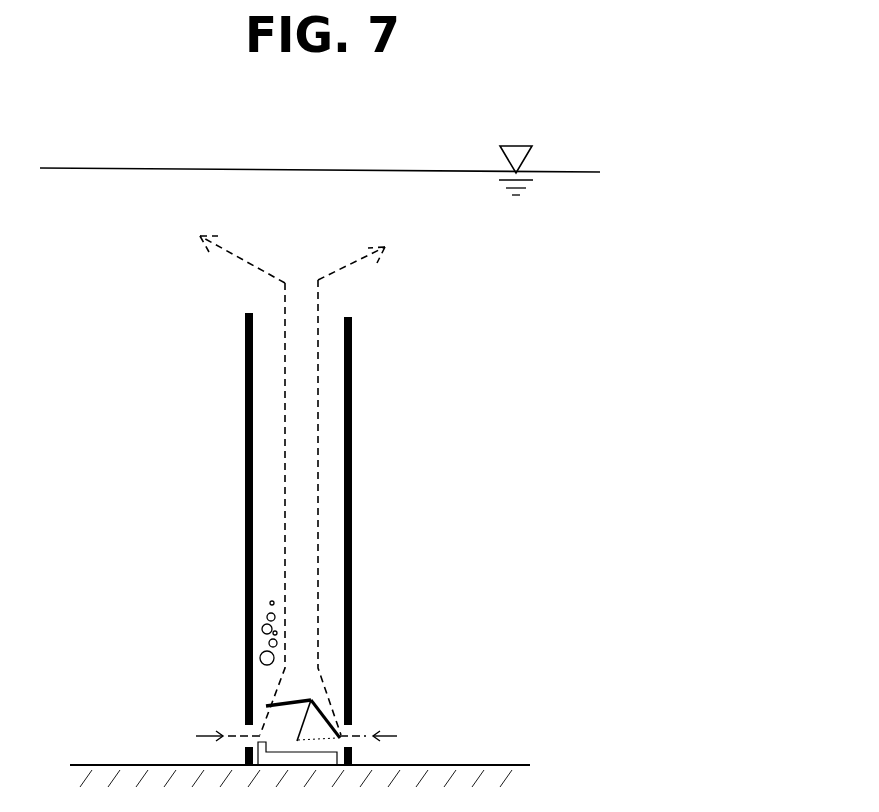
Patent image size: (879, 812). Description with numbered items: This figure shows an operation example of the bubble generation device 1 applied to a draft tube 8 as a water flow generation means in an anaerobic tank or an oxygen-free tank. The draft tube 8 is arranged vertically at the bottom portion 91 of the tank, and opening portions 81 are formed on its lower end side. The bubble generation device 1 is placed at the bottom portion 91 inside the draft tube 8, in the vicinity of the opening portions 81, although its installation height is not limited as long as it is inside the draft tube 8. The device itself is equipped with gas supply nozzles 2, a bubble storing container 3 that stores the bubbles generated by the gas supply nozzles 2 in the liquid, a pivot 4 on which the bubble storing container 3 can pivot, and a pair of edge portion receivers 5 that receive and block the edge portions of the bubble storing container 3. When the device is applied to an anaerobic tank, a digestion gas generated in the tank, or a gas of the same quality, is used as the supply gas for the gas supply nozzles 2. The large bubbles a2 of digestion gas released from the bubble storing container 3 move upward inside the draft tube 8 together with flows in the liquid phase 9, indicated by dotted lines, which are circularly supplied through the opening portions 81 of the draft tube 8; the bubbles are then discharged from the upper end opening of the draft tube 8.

The bubble generation device 1 is at (387, 683).
The gas supply nozzle 2 is at (300, 752).
The bubble storing container 3 is at (303, 688).
The pivot 4 is at (300, 734).
The edge portion receiver 5 is at (367, 753).
The draft tube 8 is at (353, 435).
The opening portion 81 is at (248, 731).
The liquid phase 9 is at (82, 201).
The bottom portion 91 is at (110, 765).
The large bubbles a2 is at (260, 630).